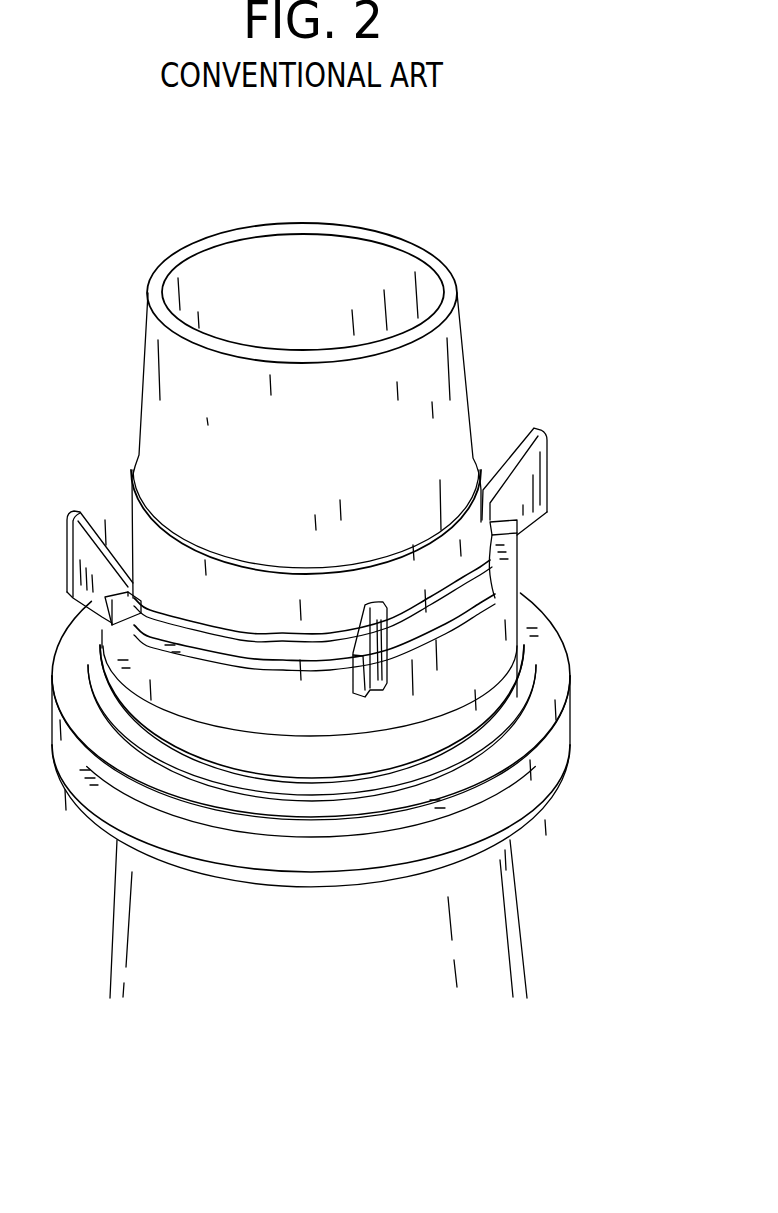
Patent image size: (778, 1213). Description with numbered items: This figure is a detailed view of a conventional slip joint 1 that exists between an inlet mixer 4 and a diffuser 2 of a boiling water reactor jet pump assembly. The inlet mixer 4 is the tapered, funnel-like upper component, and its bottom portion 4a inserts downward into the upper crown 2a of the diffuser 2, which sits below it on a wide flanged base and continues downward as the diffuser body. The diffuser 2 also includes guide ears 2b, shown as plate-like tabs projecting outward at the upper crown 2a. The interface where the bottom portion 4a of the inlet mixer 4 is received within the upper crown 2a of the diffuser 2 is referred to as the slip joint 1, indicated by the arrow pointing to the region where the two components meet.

The slip joint 1 is at (540, 553).
The diffuser 2 is at (450, 951).
The upper crown 2a is at (462, 668).
The guide ears 2b is at (531, 486).
The inlet mixer 4 is at (436, 381).
The bottom portion 4a is at (147, 537).